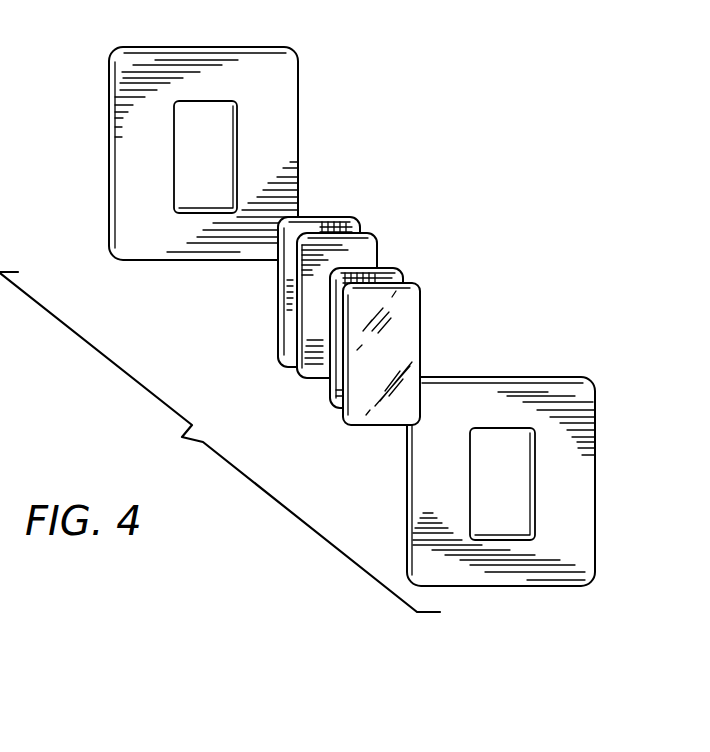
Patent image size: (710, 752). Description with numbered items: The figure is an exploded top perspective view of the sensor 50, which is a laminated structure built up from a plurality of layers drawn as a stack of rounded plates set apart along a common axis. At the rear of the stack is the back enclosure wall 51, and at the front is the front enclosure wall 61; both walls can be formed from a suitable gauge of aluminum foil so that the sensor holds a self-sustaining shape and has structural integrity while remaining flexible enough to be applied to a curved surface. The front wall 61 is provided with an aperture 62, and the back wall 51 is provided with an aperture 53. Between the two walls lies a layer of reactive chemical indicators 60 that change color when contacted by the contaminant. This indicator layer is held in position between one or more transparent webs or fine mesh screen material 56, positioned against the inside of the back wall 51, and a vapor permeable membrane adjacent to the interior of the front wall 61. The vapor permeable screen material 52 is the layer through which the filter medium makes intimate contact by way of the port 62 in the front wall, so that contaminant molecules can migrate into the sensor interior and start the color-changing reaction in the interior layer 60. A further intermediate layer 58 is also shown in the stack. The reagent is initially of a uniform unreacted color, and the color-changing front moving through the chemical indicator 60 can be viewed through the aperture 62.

The sensor 50 is at (220, 442).
The back enclosure wall 51 is at (595, 410).
The vapor permeable screen material 52 is at (323, 216).
The aperture 53 is at (510, 485).
The transparent web or fine mesh screen material 56 is at (420, 322).
The second filter element 58 is at (400, 268).
The layer of reactive chemical indicators 60 is at (360, 223).
The front enclosure wall 61 is at (298, 92).
The aperture 62 is at (217, 185).